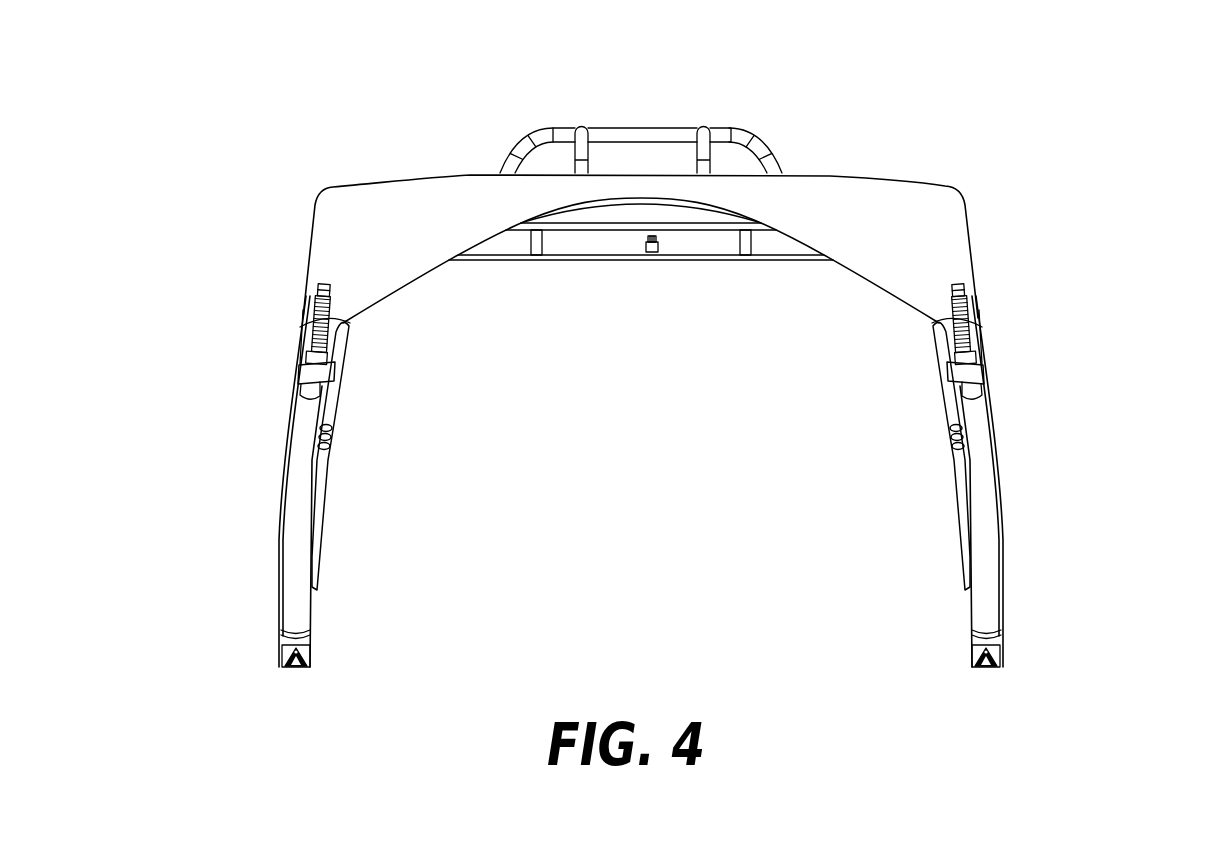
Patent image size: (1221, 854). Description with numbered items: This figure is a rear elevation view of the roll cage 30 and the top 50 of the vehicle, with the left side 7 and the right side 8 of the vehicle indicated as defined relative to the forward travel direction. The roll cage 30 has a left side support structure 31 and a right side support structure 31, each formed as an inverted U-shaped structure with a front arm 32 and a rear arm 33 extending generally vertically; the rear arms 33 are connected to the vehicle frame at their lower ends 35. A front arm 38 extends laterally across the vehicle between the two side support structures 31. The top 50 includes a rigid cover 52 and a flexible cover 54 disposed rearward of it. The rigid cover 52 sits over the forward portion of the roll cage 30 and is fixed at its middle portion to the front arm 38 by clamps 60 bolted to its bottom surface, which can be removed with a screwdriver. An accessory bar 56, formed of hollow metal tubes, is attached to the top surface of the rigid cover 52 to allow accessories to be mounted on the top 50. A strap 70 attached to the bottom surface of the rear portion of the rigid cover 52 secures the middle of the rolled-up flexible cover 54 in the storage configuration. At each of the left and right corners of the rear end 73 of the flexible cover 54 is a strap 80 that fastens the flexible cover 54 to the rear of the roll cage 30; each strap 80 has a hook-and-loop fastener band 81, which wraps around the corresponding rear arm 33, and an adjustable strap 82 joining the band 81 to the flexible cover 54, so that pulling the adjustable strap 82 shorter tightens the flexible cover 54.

The left side 7 is at (203, 238).
The right side 8 is at (1141, 229).
The roll cage 30 is at (1051, 424).
The side support structure 31 is at (295, 538).
The front arm 32 is at (338, 361).
The rear arm 33 is at (300, 485).
The lower end 35 is at (312, 660).
The front arm 38 is at (583, 245).
The top 50 is at (915, 131).
The rigid cover 52 is at (718, 222).
The flexible cover 54 is at (950, 227).
The accessory bar 56 is at (652, 127).
The clamp 60 is at (537, 262).
The strap 70 is at (652, 252).
The rear end 73 is at (420, 202).
The strap 80 is at (274, 338).
The hook-and-loop fastener band 81 is at (303, 405).
The adjustable strap 82 is at (310, 310).